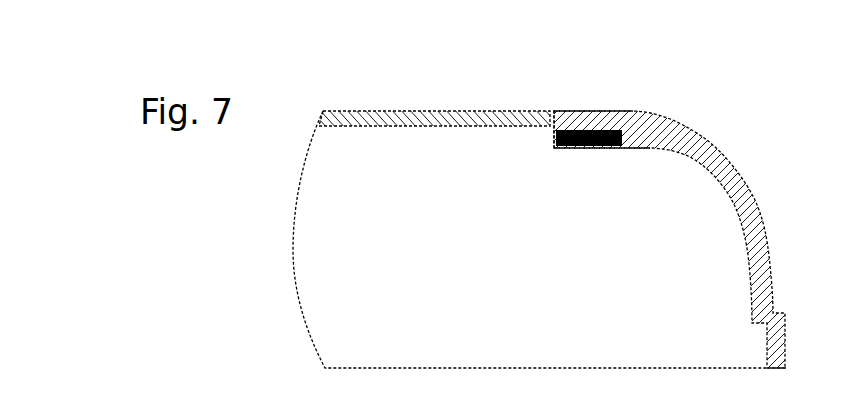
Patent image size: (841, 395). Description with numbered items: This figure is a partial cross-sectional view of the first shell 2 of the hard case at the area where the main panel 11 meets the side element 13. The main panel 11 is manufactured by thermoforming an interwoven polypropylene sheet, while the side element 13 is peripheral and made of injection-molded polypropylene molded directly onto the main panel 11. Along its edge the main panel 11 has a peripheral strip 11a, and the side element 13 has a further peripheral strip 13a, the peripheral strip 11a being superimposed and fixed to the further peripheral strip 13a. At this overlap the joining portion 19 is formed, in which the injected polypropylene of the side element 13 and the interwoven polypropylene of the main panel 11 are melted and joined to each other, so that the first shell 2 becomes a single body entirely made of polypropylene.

The first shell 2 is at (397, 180).
The main panel 11 is at (380, 120).
The peripheral strip 11a is at (553, 137).
The side element 13 is at (733, 168).
The further peripheral strip 13a is at (595, 123).
The joining portion 19 is at (552, 168).